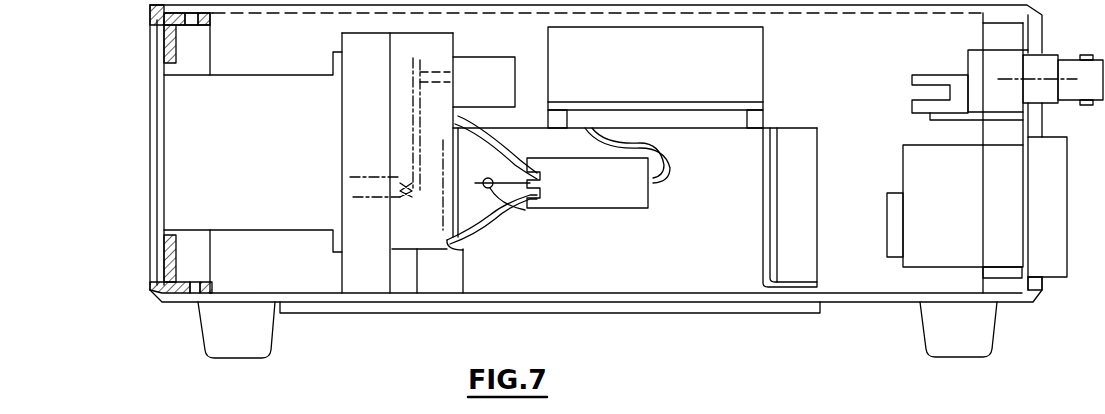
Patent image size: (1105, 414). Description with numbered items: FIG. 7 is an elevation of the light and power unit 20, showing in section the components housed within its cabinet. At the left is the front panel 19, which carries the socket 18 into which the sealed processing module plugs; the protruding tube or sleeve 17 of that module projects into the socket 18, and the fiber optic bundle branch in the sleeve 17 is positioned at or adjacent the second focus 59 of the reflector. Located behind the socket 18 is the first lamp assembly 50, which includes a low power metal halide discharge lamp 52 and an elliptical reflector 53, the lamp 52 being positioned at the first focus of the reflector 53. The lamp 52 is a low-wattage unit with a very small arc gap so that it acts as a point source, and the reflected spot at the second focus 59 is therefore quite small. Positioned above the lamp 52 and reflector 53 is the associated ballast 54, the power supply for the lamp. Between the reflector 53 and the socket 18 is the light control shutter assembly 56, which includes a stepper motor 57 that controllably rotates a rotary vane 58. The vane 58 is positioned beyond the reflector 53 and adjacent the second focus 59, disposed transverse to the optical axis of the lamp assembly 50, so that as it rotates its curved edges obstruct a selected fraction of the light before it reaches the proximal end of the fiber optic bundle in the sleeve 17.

The protruding tube or sleeve 17 is at (357, 197).
The socket 18 is at (253, 225).
The front panel 19 is at (160, 255).
The light and power unit 20 is at (640, 315).
The first lamp assembly 50 is at (470, 258).
The low power metal halide discharge lamp 52 is at (492, 192).
The elliptical reflector 53 is at (477, 237).
The ballast 54 is at (697, 97).
The light control shutter assembly 56 is at (373, 53).
The stepper motor 57 is at (500, 65).
The rotary vane 58 is at (413, 147).
The second focus 59 is at (412, 197).